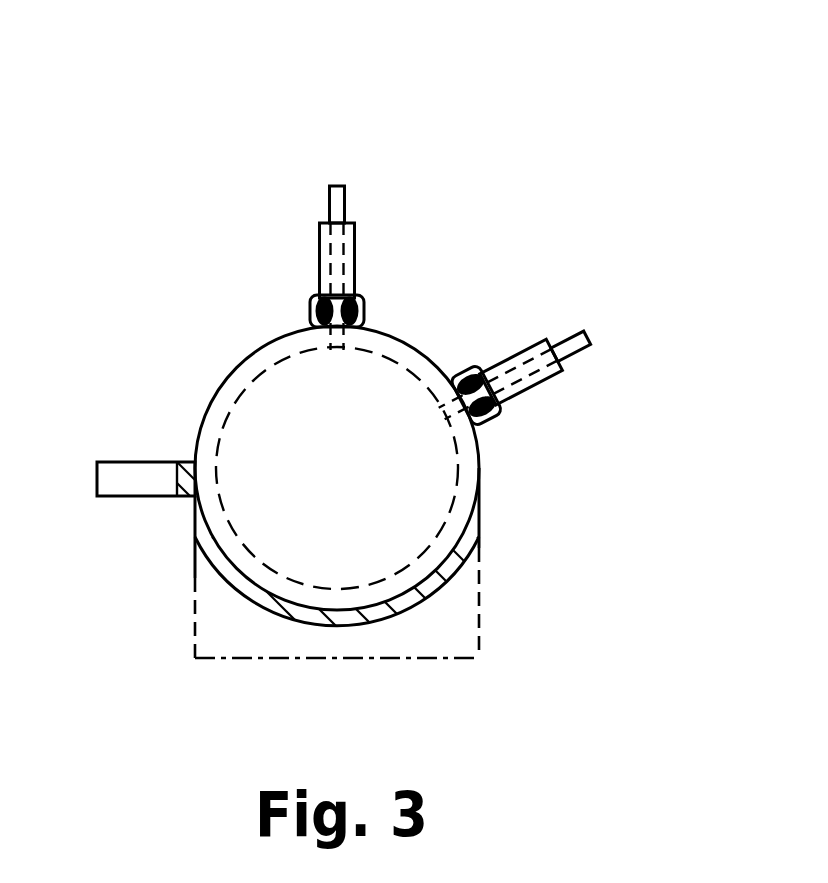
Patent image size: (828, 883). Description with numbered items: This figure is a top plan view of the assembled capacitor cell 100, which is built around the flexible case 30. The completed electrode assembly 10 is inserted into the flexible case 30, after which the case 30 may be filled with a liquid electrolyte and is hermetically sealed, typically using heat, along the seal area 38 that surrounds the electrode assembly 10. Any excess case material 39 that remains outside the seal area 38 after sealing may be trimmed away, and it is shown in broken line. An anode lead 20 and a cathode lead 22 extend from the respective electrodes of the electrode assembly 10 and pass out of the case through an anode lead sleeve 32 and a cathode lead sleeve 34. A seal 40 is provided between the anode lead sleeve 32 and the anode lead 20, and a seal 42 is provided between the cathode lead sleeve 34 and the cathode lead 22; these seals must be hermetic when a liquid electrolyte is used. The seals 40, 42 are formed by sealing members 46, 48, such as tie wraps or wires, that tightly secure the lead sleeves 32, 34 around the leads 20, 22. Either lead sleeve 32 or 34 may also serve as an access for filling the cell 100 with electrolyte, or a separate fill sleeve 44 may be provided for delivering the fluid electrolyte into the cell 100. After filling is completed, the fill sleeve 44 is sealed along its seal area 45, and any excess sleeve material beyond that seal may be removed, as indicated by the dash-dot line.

The capacitor cell 100 is at (359, 63).
The electrode assembly 10 is at (400, 534).
The flexible case 30 is at (227, 378).
The anode lead 20 is at (344, 207).
The cathode lead 22 is at (590, 350).
The anode lead sleeve 32 is at (320, 257).
The cathode lead sleeve 34 is at (538, 347).
The seal 40 is at (346, 296).
The seal 42 is at (490, 367).
The sealing member 46 is at (311, 317).
The sealing member 48 is at (485, 413).
The fill sleeve 44 is at (152, 497).
The seal area 45 is at (183, 460).
The seal area 38 is at (270, 597).
The excess case material 39 is at (455, 632).